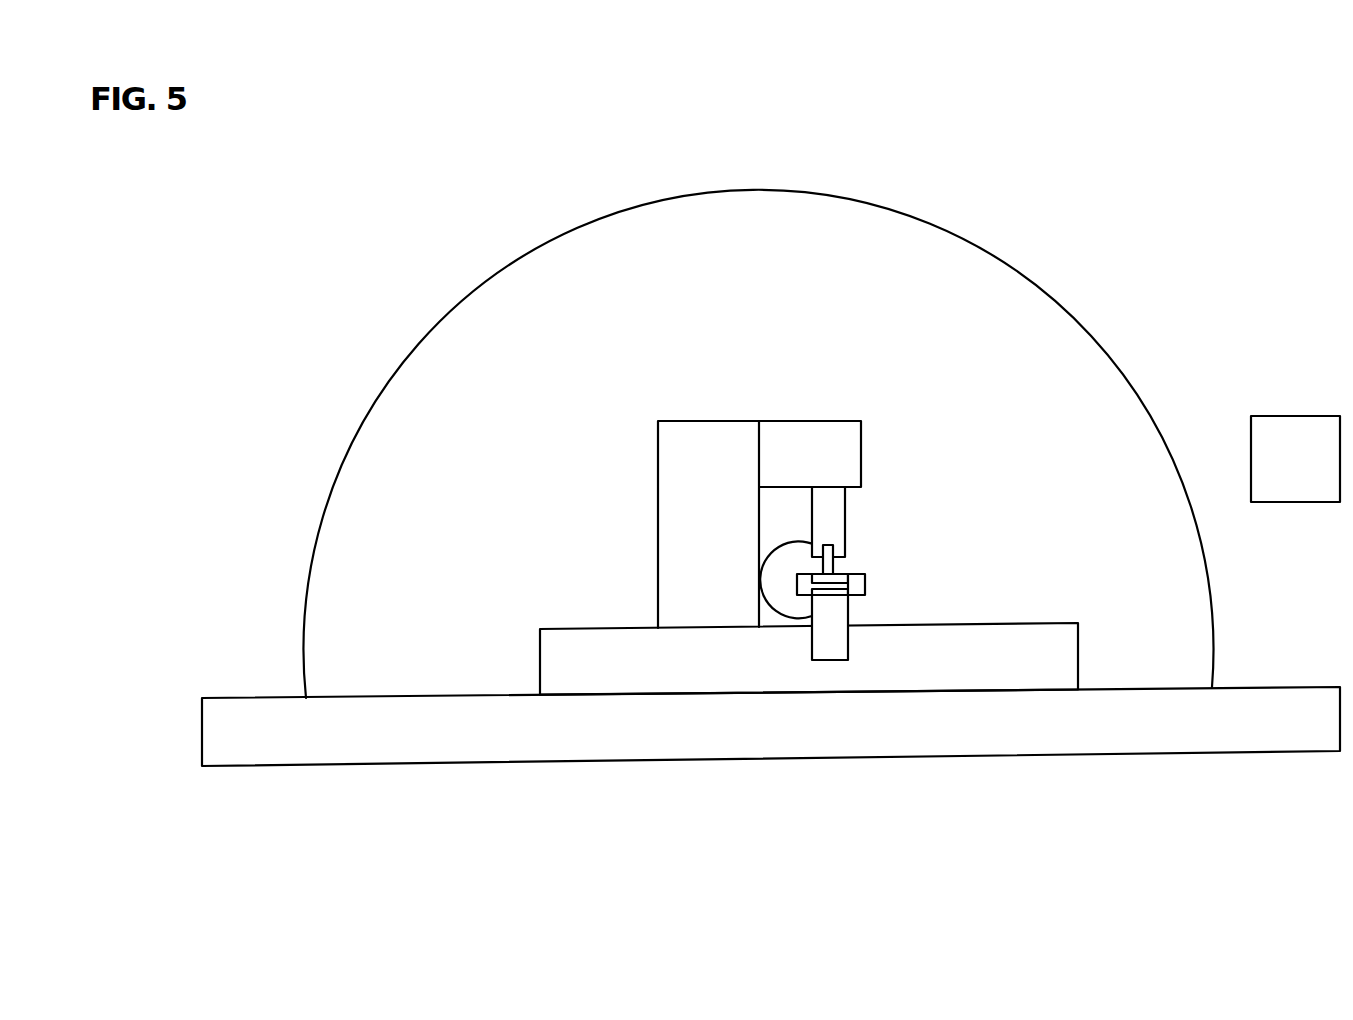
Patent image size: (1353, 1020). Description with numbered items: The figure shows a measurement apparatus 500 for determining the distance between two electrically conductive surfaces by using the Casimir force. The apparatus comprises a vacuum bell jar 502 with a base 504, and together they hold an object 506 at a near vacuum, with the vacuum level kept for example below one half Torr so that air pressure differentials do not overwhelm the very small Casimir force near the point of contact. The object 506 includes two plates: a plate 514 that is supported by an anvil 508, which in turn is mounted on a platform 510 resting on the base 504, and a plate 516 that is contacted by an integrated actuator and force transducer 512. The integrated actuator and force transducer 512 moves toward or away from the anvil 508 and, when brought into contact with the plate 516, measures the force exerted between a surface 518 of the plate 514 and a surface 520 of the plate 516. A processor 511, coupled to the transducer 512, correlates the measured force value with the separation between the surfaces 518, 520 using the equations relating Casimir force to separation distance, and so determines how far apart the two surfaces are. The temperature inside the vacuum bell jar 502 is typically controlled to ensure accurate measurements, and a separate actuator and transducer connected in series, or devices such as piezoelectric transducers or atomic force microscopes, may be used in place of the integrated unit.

The measurement apparatus 500 is at (1028, 171).
The vacuum bell jar 502 is at (1046, 288).
The base 504 is at (998, 748).
The object 506 is at (863, 575).
The anvil 508 is at (825, 643).
The platform 510 is at (1002, 642).
The processor 511 is at (1316, 469).
The integrated actuator and force transducer 512 is at (836, 542).
The plate 514 is at (837, 507).
The plate 516 is at (767, 552).
The surface 518 is at (849, 590).
The surface 520 is at (846, 572).